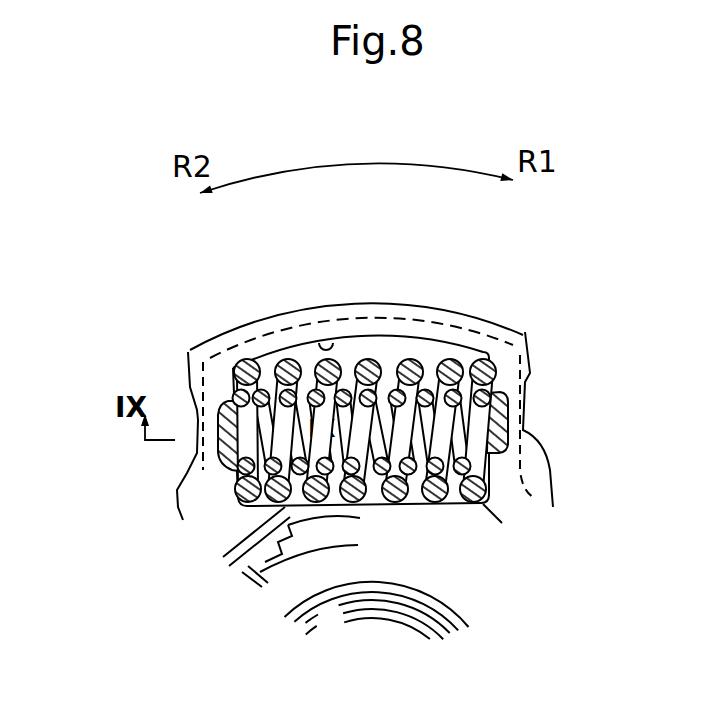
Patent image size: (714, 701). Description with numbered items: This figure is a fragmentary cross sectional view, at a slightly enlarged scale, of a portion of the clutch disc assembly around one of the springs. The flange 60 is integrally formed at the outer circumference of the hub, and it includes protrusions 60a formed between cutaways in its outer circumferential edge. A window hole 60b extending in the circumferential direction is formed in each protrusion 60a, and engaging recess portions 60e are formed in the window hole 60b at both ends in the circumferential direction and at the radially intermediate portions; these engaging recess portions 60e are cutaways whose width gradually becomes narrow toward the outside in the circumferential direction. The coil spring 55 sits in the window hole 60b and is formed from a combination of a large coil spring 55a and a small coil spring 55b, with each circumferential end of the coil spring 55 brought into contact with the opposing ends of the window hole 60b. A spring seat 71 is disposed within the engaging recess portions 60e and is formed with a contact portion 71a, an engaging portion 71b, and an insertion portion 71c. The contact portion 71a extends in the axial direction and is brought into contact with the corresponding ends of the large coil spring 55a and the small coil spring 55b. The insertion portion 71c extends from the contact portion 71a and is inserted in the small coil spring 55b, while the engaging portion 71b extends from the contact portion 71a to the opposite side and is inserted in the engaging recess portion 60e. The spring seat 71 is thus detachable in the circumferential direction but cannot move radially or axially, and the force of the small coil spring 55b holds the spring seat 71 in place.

The coil spring 55 is at (429, 353).
The large coil spring 55a is at (458, 353).
The small coil spring 55b is at (505, 380).
The flange 60 is at (366, 424).
The protrusion 60a is at (270, 335).
The window hole 60b is at (327, 345).
The engaging recess portion 60e is at (228, 428).
The spring seat 71 is at (215, 385).
The contact portion 71a is at (508, 410).
The engaging portion 71b is at (508, 432).
The insertion portion 71c is at (498, 518).